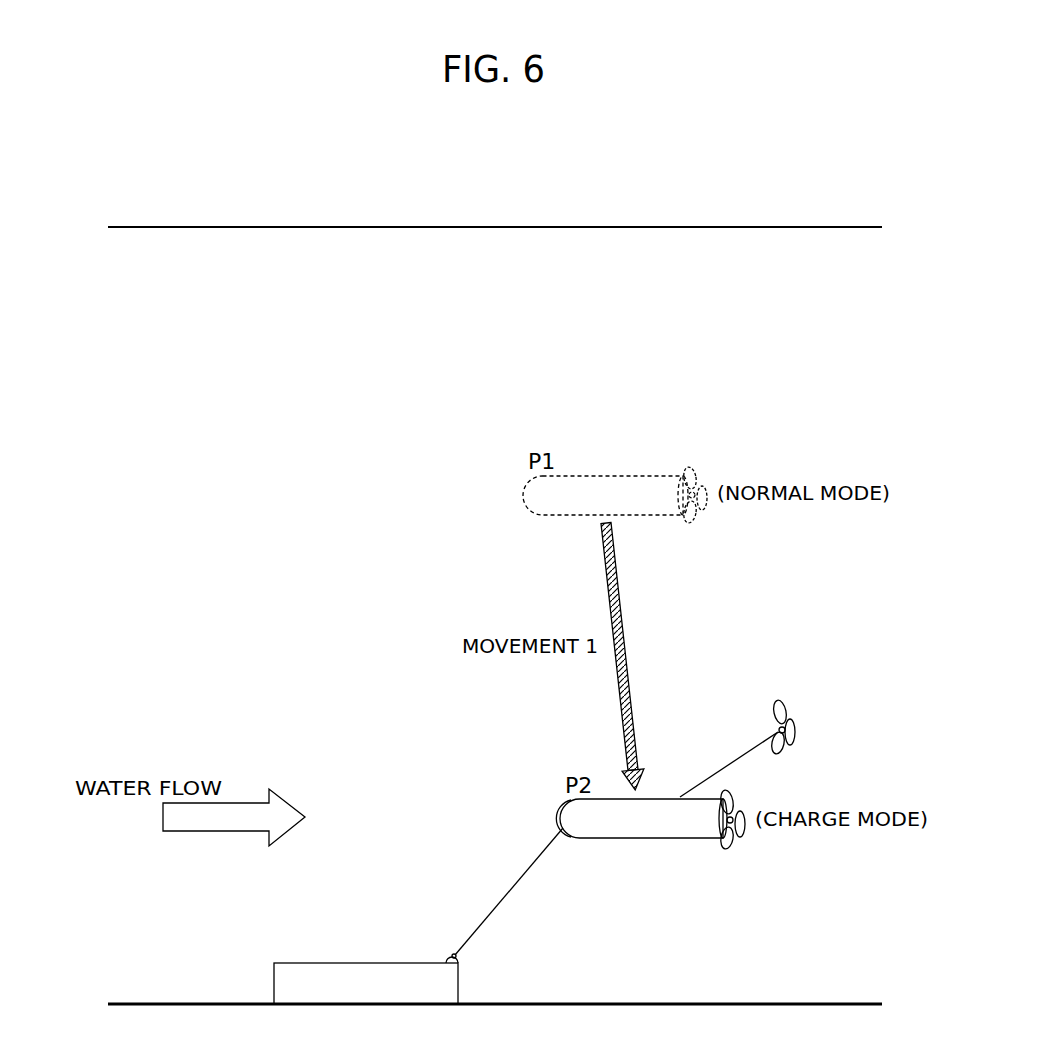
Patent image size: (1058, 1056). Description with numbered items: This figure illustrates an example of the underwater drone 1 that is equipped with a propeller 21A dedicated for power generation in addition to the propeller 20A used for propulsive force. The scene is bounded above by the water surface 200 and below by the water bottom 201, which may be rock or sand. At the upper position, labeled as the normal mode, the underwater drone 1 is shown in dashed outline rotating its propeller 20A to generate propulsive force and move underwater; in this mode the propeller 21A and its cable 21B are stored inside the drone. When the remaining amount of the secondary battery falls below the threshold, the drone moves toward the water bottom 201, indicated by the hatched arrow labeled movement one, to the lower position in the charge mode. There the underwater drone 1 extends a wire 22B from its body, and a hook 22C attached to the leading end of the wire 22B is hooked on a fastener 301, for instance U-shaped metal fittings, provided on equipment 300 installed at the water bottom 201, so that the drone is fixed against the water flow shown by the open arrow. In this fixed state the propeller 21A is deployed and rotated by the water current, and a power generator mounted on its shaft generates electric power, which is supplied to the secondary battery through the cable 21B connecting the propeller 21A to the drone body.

The underwater drone 1 is at (639, 476).
The propeller 20A is at (701, 470).
The propeller dedicated for power generation 21A is at (782, 717).
The cable 21B is at (735, 756).
The wire 22B is at (486, 920).
The hook 22C is at (462, 948).
The water surface 200 is at (834, 226).
The water bottom 201 is at (834, 1002).
The equipment 300 is at (308, 962).
The fastener 301 is at (446, 955).